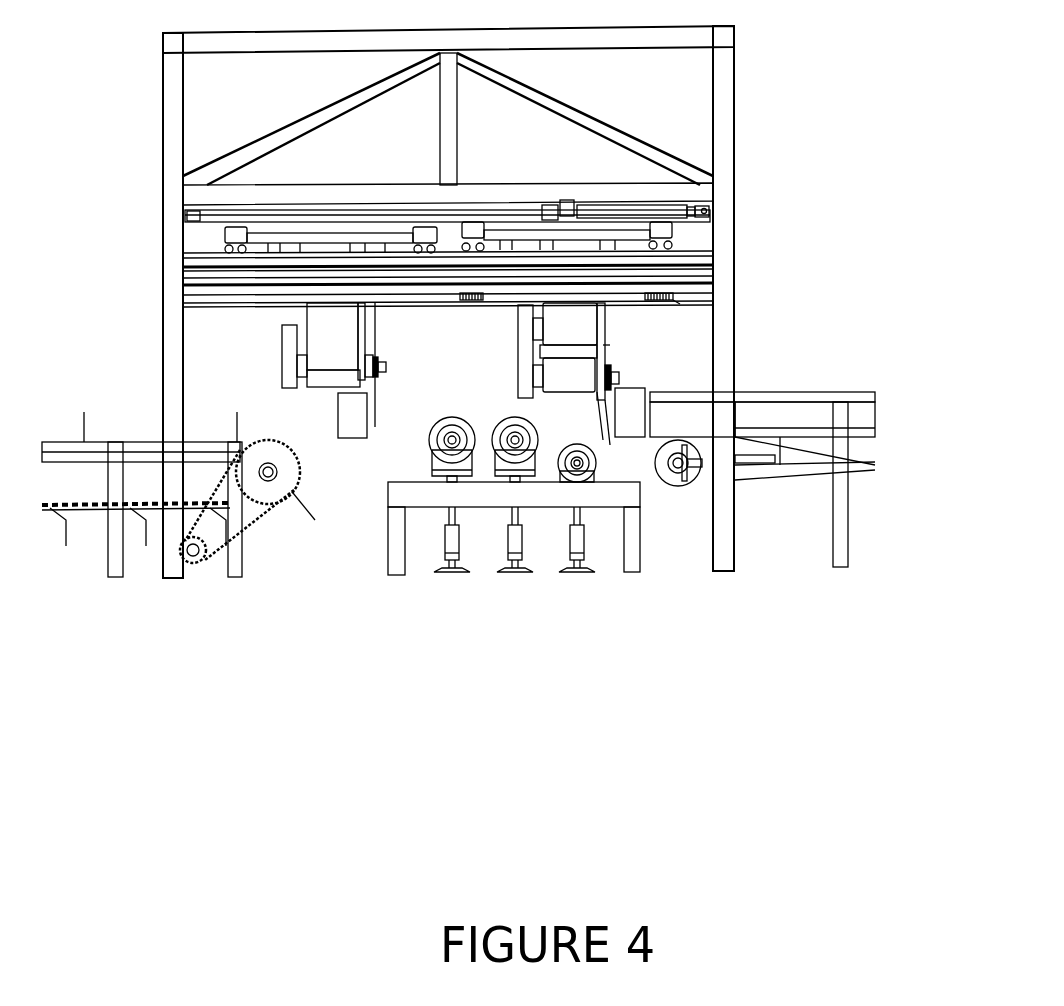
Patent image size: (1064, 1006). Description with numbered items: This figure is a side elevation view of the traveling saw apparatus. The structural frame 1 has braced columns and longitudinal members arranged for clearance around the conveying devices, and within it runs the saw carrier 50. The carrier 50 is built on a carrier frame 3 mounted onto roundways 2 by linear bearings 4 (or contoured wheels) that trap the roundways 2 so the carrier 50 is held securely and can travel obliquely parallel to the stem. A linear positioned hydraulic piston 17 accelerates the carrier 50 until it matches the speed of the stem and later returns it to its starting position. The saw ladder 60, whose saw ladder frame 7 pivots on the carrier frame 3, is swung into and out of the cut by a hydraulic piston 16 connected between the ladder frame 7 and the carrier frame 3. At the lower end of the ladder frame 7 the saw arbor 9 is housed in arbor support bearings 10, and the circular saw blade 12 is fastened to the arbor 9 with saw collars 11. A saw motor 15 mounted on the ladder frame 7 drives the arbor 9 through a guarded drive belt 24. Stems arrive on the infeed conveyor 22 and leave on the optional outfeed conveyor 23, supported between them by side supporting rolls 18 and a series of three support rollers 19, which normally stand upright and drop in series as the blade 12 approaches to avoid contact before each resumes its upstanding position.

The structural frame 1 is at (163, 83).
The linear positioned hydraulic piston 17 is at (222, 203).
The saw carrier 50 is at (233, 232).
The roundways 2 is at (190, 259).
The hydraulic piston 16 is at (563, 200).
The saw ladder frame 7 is at (620, 197).
The carrier frame 3 is at (668, 223).
The linear bearings 4 is at (672, 247).
The saw motor 15 is at (662, 300).
The circular saw blade 12 is at (580, 317).
The saw collars 11 is at (612, 358).
The saw arbor 9 is at (614, 373).
The outfeed conveyor 23 is at (757, 392).
The saw ladder 60 is at (333, 340).
The side supporting rolls 18 is at (345, 412).
The infeed conveyor 22 is at (150, 443).
The guarded drive belt 24 is at (520, 335).
The support rollers 19 is at (568, 478).
The arbor support bearings 10 is at (637, 435).